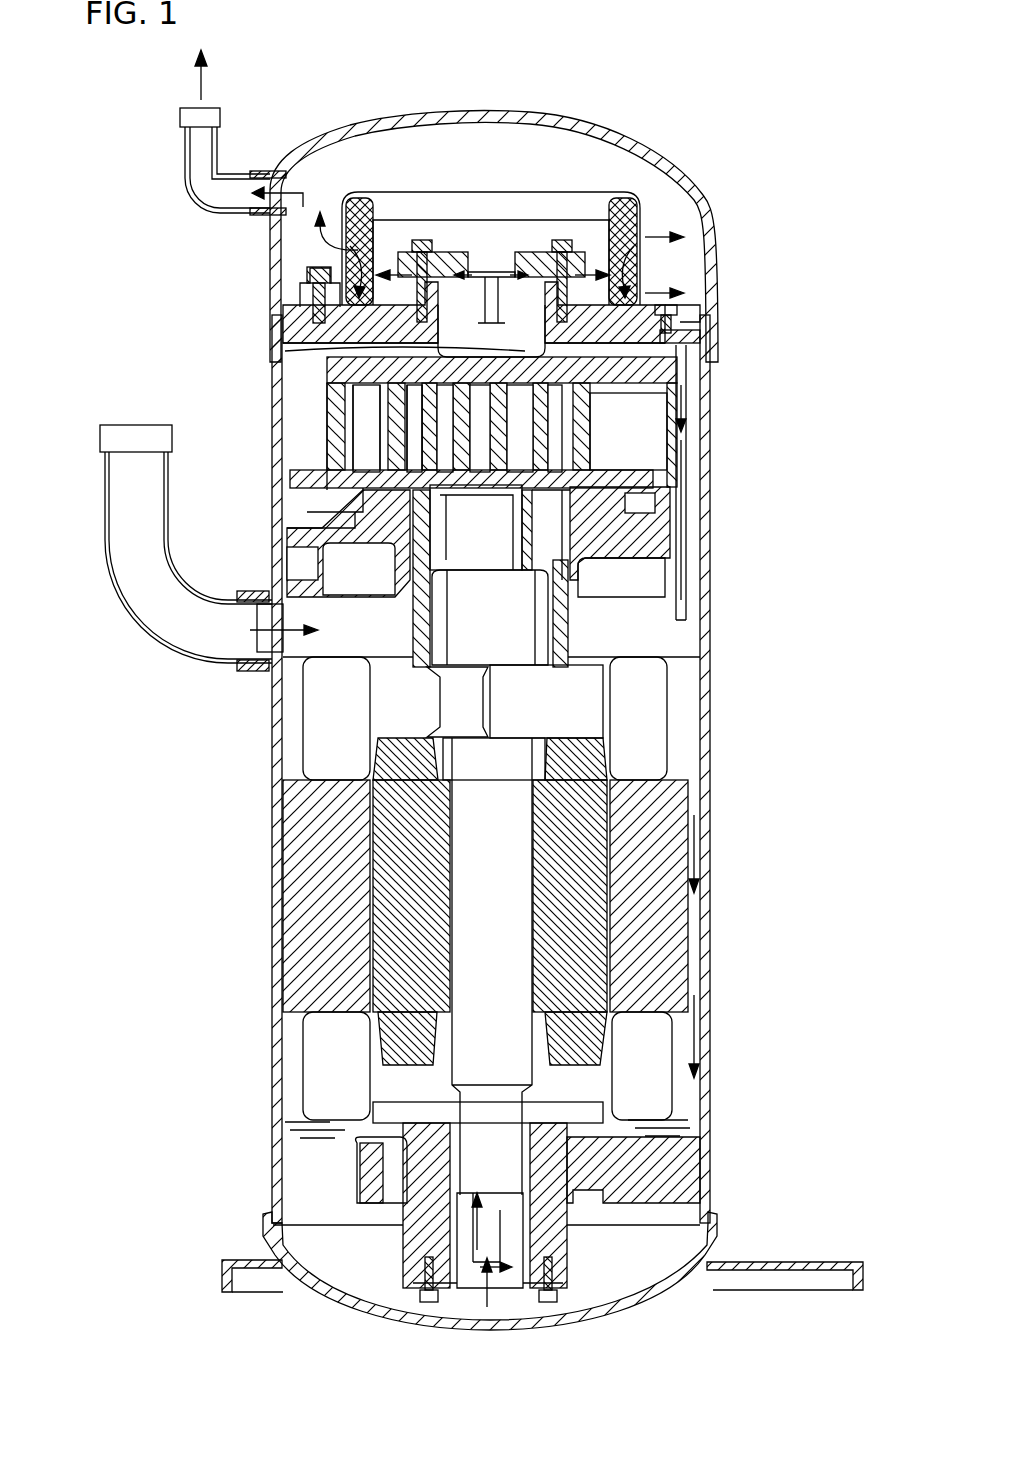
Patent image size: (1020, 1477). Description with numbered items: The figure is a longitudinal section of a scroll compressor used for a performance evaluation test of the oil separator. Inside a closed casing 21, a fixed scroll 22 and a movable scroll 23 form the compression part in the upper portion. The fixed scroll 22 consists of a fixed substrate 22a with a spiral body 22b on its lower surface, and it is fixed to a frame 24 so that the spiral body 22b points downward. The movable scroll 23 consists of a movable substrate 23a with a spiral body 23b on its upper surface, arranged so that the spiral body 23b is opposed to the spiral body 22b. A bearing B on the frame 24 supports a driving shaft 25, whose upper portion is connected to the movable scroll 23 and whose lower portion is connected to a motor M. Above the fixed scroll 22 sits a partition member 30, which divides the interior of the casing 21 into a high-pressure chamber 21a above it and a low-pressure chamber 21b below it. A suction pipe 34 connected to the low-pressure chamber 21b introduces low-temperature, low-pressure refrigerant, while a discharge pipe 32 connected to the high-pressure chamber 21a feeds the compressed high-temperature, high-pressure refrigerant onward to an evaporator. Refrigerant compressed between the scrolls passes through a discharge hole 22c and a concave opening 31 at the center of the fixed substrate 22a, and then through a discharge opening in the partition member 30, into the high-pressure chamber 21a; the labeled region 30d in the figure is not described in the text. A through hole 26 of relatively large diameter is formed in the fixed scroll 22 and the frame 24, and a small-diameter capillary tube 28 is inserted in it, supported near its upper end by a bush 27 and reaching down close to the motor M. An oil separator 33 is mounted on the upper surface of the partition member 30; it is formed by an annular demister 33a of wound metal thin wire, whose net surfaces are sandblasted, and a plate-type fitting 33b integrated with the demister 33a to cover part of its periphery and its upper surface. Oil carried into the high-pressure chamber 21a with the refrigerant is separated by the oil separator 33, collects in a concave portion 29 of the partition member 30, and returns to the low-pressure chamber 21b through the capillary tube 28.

The closed casing 21 is at (542, 710).
The high-pressure chamber 21a is at (603, 165).
The low-pressure chamber 21b is at (690, 672).
The fixed scroll 22 is at (488, 418).
The fixed substrate 22a is at (352, 376).
The spiral body 22b is at (375, 405).
The discharge hole 22c is at (690, 372).
The movable scroll 23 is at (411, 439).
The movable substrate 23a is at (352, 472).
The spiral body 23b is at (342, 444).
The frame 24 is at (655, 540).
The driving shaft 25 is at (503, 963).
The through hole 26 is at (690, 445).
The bush 27 is at (690, 338).
The capillary tube 28 is at (690, 485).
The concave portion 29 is at (690, 312).
The partition member 30 is at (300, 318).
The discharge port 30d is at (505, 292).
The concave opening 31 is at (420, 338).
The discharge pipe 32 is at (212, 208).
The oil separator 33 is at (589, 231).
The demister 33a is at (640, 232).
The plate-type fitting 33b is at (620, 200).
The suction pipe 34 is at (192, 665).
The bearing B is at (600, 630).
The motor M is at (690, 745).